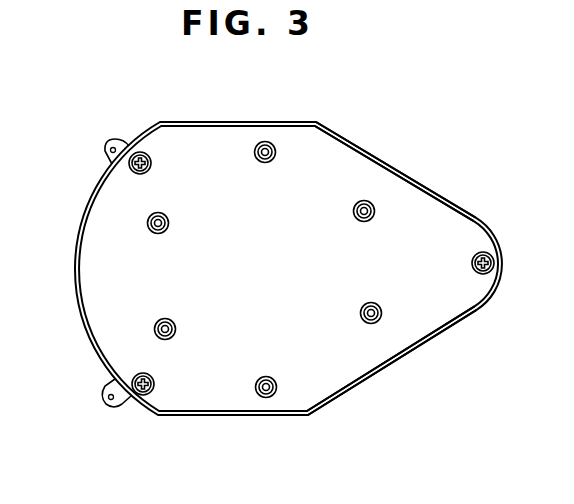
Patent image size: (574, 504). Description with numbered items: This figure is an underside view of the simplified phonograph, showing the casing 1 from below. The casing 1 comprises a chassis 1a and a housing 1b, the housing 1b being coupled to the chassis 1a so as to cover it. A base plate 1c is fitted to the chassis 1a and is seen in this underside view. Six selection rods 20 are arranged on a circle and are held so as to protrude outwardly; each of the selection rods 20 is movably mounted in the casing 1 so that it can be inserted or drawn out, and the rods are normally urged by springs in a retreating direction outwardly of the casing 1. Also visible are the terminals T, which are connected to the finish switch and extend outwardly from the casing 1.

The casing 1 is at (332, 152).
The chassis 1a is at (328, 410).
The housing 1b is at (454, 197).
The base plate 1c is at (350, 378).
The selection rods 20 is at (270, 142).
The terminal T is at (114, 139).